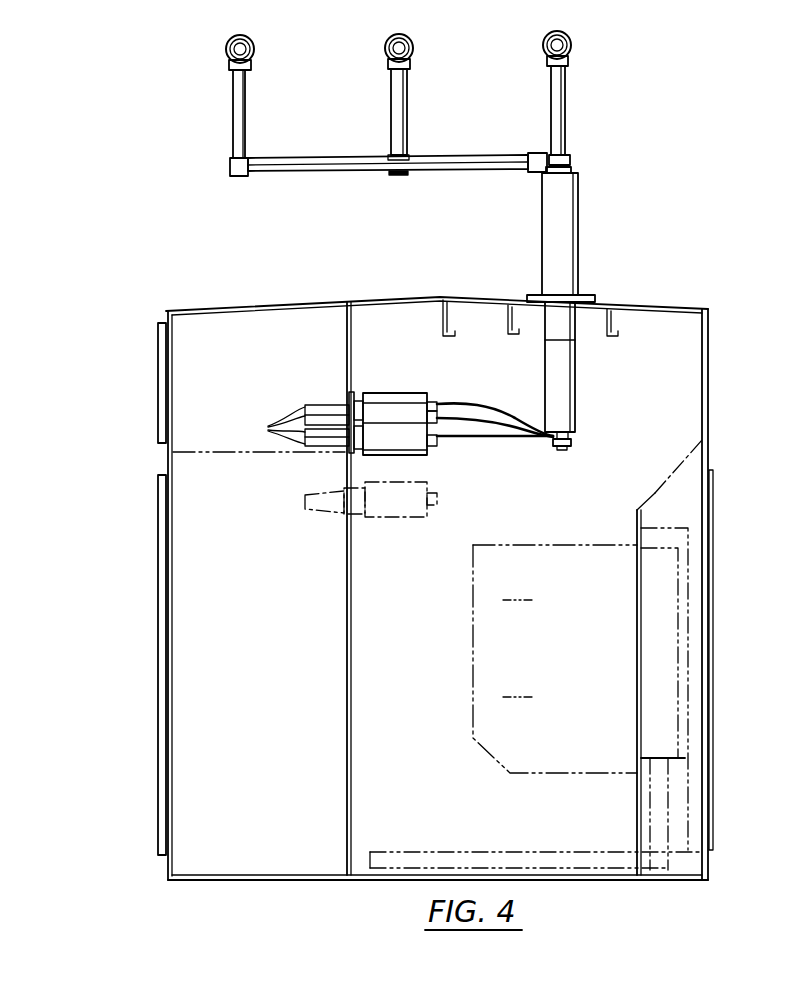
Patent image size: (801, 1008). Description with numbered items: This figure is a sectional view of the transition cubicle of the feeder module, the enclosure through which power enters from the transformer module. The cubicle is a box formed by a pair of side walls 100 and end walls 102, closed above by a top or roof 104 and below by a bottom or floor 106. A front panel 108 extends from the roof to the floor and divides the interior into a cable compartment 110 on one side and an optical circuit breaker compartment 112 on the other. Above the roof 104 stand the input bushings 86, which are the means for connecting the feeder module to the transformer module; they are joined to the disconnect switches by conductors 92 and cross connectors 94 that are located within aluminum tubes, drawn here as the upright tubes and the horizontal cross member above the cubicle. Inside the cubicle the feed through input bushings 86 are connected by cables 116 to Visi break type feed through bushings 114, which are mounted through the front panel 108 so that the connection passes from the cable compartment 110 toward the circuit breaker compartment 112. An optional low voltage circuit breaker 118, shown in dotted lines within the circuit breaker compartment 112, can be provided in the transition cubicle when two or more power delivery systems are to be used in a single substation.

The input bushing 86 is at (578, 266).
The conductor 92 is at (253, 48).
The cross connector 94 is at (392, 116).
The side wall 100 is at (708, 391).
The end wall 102 is at (250, 602).
The top or roof 104 is at (381, 300).
The bottom or floor 106 is at (368, 880).
The front panel 108 is at (353, 595).
The cable compartment 110 is at (243, 395).
The optical circuit breaker compartment 112 is at (548, 513).
The feed through bushing 114 is at (340, 423).
The cable 116 is at (468, 436).
The low voltage circuit breaker 118 is at (473, 643).